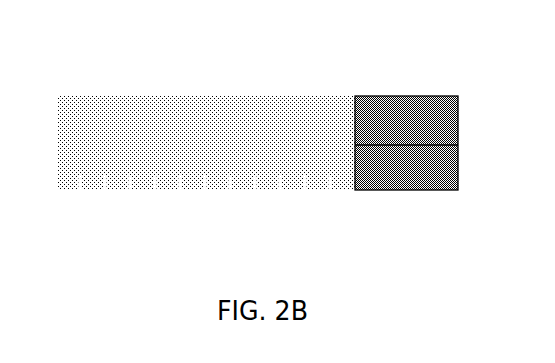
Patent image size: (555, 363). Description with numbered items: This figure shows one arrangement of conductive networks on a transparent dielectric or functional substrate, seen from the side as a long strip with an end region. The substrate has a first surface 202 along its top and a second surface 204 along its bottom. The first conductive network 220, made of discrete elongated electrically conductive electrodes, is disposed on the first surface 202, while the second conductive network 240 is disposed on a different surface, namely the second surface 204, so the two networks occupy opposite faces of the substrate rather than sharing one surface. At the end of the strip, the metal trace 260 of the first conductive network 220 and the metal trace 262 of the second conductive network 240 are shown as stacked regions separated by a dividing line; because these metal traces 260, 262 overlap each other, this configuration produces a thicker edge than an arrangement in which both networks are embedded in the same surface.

The first surface 202 is at (65, 88).
The second surface 204 is at (62, 198).
The first conductive network 220 is at (154, 96).
The second conductive network 240 is at (328, 193).
The metal trace 260 is at (399, 104).
The metal trace 262 is at (403, 183).